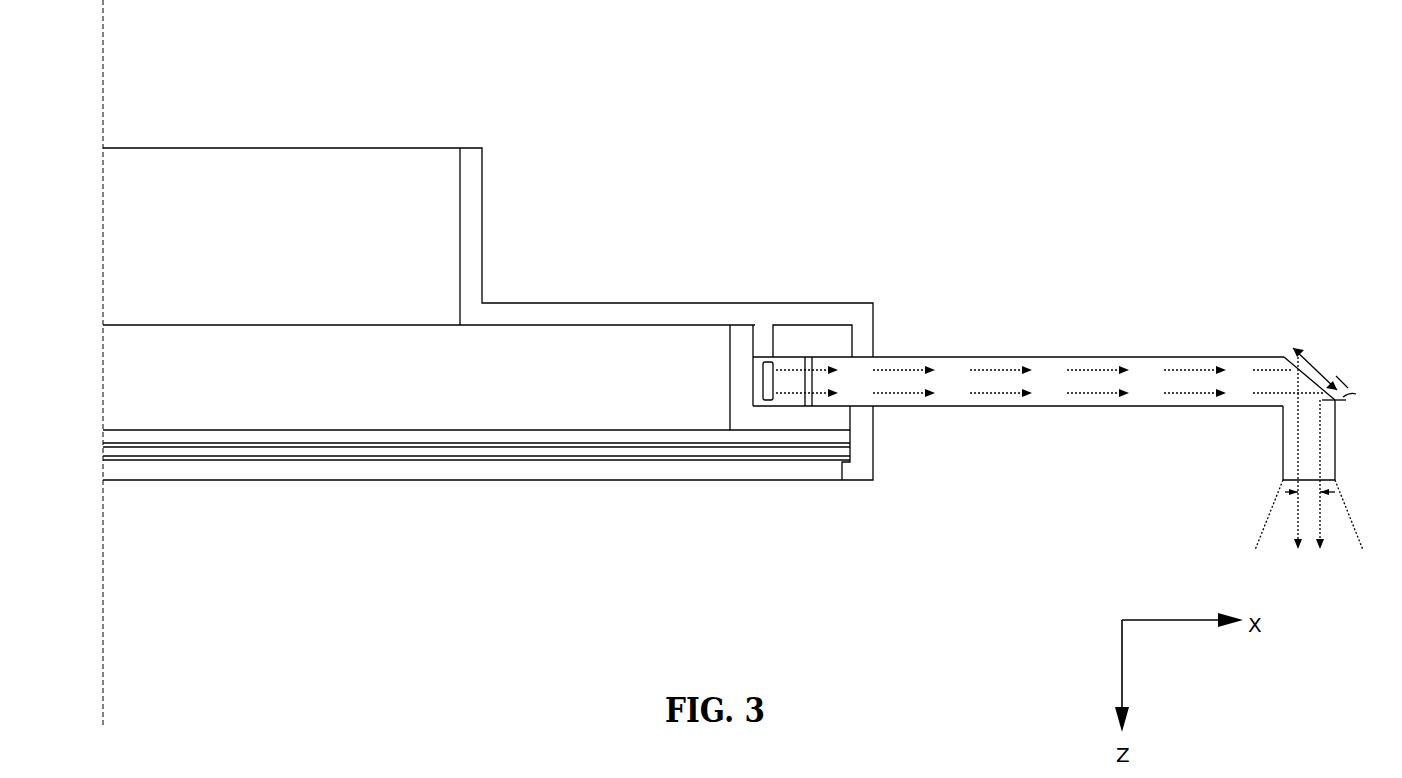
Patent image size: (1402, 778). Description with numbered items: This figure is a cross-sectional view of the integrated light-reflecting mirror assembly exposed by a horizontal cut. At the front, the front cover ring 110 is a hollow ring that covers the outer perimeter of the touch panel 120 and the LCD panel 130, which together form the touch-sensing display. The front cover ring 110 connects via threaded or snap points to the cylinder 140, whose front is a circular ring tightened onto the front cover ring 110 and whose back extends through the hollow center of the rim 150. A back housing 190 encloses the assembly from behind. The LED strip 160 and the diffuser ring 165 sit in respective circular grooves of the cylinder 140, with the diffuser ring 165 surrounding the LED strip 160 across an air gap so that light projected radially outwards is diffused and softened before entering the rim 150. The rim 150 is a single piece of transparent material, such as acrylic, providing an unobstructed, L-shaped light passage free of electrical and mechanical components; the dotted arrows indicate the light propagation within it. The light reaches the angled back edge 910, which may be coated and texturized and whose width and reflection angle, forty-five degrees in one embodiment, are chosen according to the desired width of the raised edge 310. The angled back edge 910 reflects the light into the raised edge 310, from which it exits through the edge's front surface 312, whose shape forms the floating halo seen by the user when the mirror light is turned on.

The front cover ring 110 is at (857, 463).
The touch panel 120 is at (415, 435).
The LCD panel 130 is at (278, 450).
The cylinder 140 is at (770, 418).
The rim 150 is at (1073, 358).
The LED strip 160 is at (757, 360).
The diffuser ring 165 is at (807, 360).
The back housing 190 is at (553, 303).
The raised edge 310 is at (1292, 433).
The edge's front surface 312 is at (1306, 482).
The angled back edge 910 is at (1307, 378).